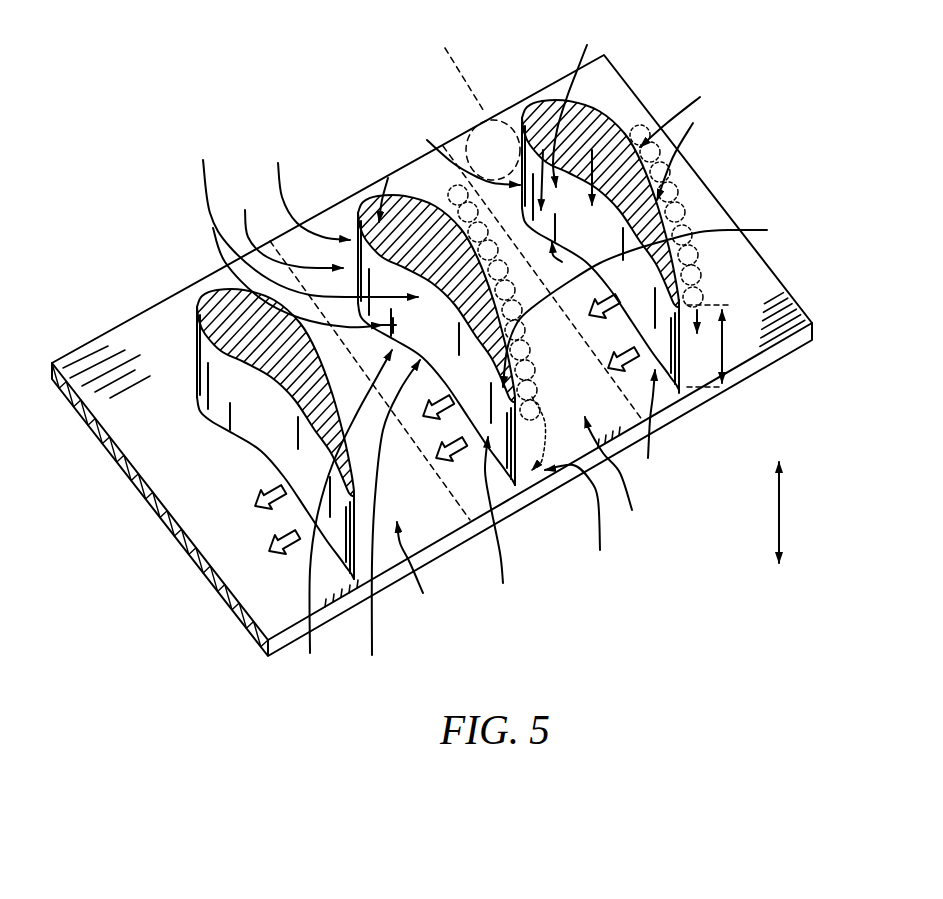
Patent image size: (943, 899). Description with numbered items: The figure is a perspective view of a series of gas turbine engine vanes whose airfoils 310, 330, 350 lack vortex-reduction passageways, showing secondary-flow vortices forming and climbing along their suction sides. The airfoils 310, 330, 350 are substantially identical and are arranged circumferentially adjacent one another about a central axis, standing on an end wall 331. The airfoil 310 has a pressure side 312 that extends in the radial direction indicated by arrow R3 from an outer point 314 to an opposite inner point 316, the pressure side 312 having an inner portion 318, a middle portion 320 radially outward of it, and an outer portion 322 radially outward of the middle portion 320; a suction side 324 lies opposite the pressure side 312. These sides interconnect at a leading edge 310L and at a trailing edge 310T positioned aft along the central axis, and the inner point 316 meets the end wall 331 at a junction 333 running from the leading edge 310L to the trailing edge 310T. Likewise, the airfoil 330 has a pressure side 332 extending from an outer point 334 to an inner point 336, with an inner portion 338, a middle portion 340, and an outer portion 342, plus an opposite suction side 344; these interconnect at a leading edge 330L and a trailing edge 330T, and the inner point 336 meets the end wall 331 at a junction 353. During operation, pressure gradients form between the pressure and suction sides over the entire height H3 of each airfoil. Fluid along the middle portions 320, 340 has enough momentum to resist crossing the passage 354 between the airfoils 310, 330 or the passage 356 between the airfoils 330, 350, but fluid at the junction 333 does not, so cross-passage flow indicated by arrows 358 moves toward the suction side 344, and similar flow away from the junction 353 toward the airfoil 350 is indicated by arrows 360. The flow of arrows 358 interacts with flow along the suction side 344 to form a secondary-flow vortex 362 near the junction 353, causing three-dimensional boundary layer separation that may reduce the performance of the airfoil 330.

The airfoil 310 is at (617, 110).
The leading edge 310L is at (456, 147).
The trailing edge 310T is at (680, 395).
The pressure side 312 is at (645, 125).
The outer point 314 is at (694, 115).
The inner point 316 is at (648, 426).
The inner portion 318 is at (490, 120).
The middle portion 320 is at (531, 100).
The outer portion 322 is at (582, 105).
The suction side 324 is at (680, 225).
The airfoil 330 is at (385, 183).
The leading edge 330L is at (280, 226).
The trailing edge 330T is at (515, 478).
The end wall 331 is at (598, 283).
The pressure side 332 is at (505, 523).
The junction 333 is at (650, 187).
The outer point 334 is at (367, 190).
The inner point 336 is at (341, 515).
The inner portion 338 is at (207, 292).
The middle portion 340 is at (300, 216).
The outer portion 342 is at (304, 191).
The suction side 344 is at (658, 301).
The airfoil 350 is at (197, 290).
The junction 353 is at (386, 515).
The passage 354 is at (619, 477).
The passage 356 is at (419, 573).
The arrows 358 is at (603, 318).
The arrows 360 is at (433, 415).
The vortex 362 is at (583, 522).
The height H3 is at (723, 345).
The arrow indicating radial direction R3 is at (782, 507).